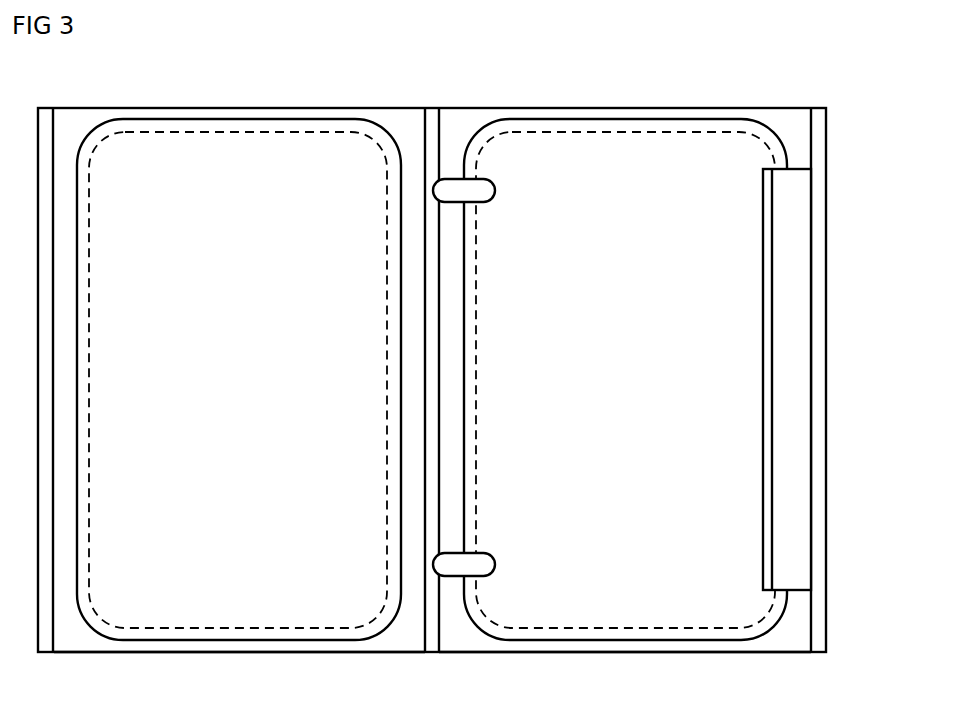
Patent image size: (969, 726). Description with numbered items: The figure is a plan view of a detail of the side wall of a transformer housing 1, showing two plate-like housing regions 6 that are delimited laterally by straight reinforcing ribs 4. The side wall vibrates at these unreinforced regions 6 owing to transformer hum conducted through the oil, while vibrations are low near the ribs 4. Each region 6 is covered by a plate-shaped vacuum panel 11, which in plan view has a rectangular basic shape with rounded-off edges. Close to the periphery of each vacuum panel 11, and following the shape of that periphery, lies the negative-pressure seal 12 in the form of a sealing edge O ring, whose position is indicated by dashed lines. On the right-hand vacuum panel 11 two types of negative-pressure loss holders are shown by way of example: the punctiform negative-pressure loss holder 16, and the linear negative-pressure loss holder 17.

The housing 1 is at (780, 108).
The reinforcing rib 4 is at (42, 654).
The plate-like wall region 6 is at (70, 640).
The vacuum panel 11 is at (238, 119).
The negative-pressure seal 12 is at (257, 629).
The punctiform negative-pressure loss holder 16 is at (489, 190).
The linear negative-pressure loss holder 17 is at (760, 553).